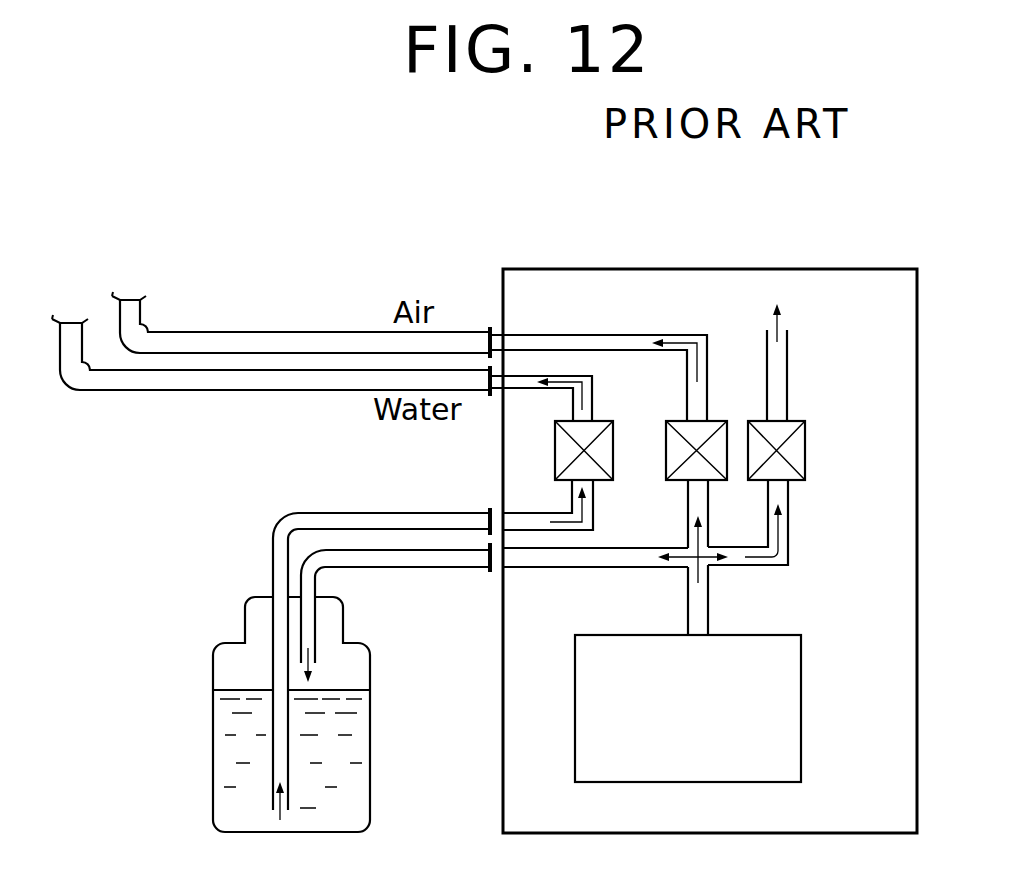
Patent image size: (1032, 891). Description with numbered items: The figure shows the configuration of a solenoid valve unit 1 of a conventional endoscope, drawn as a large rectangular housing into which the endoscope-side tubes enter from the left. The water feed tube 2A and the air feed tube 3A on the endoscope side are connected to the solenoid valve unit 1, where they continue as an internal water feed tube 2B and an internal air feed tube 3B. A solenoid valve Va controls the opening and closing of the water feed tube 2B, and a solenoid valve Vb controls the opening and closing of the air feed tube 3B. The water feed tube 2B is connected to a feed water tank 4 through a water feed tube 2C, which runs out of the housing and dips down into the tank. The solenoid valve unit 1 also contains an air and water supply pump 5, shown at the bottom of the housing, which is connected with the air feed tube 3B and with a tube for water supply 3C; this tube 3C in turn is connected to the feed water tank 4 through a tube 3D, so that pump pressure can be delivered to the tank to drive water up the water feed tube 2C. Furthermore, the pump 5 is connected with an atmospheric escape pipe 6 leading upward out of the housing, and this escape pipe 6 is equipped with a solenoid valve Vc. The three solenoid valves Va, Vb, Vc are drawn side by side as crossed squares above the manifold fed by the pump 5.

The solenoid valve unit 1 is at (848, 268).
The air feed tube 3A is at (255, 332).
The water feed tube 2A is at (254, 391).
The air feed tube 3B is at (628, 334).
The water feed tube 2B is at (595, 510).
The tube for water supply 3C is at (600, 566).
The water feed tube 2C is at (386, 513).
The tube 3D is at (413, 567).
The feed water tank 4 is at (371, 758).
The air and water supply pump 5 is at (802, 703).
The atmospheric escape pipe 6 is at (788, 352).
The solenoid valve Va is at (625, 425).
The solenoid valve Vb is at (738, 425).
The solenoid valve Vc is at (818, 425).